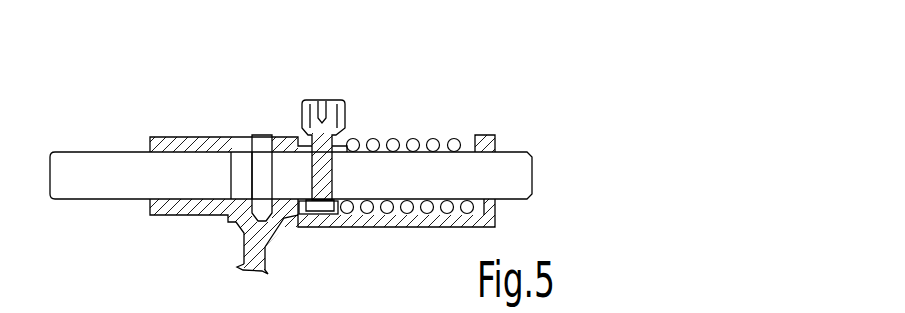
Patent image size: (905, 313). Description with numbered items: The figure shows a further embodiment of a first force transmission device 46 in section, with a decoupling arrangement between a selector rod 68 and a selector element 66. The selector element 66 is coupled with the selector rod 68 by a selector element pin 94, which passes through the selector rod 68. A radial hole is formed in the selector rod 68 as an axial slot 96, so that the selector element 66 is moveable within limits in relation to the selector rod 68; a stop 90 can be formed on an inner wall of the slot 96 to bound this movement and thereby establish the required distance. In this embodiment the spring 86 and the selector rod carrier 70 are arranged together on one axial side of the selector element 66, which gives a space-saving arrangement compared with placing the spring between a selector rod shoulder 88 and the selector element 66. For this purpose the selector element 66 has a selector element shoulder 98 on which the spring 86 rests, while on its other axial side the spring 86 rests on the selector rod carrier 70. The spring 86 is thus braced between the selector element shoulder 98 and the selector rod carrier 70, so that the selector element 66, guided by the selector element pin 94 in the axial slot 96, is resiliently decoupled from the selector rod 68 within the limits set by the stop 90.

The first force transmission device 46 is at (329, 167).
The selector element 66 is at (272, 232).
The selector rod 68 is at (516, 170).
The selector rod carrier 70 is at (345, 112).
The spring 86 is at (419, 137).
The selector rod shoulder 88 is at (330, 215).
The stop 90 is at (272, 171).
The selector element pin 94 is at (263, 146).
The axial slot 96 is at (243, 173).
The selector element shoulder 98 is at (488, 227).